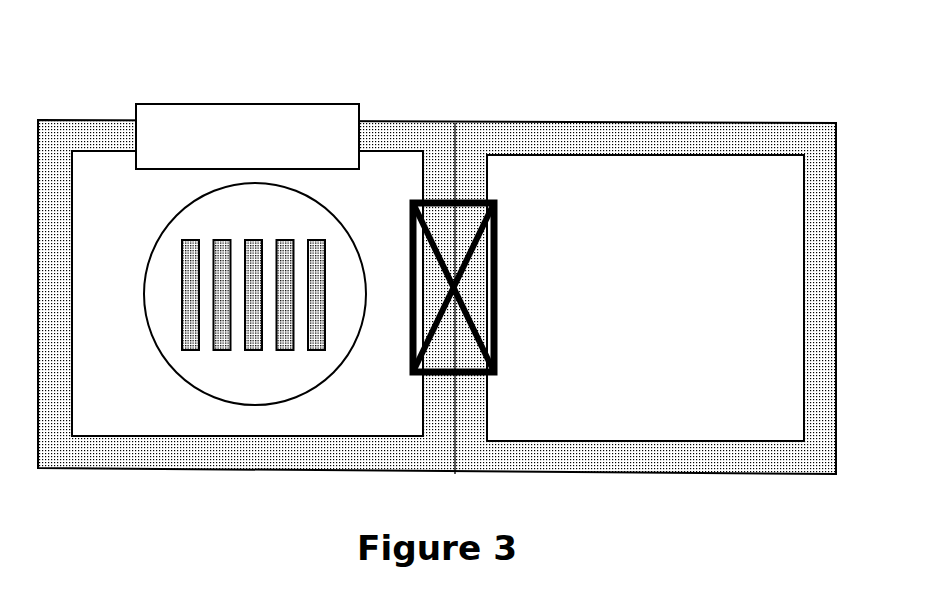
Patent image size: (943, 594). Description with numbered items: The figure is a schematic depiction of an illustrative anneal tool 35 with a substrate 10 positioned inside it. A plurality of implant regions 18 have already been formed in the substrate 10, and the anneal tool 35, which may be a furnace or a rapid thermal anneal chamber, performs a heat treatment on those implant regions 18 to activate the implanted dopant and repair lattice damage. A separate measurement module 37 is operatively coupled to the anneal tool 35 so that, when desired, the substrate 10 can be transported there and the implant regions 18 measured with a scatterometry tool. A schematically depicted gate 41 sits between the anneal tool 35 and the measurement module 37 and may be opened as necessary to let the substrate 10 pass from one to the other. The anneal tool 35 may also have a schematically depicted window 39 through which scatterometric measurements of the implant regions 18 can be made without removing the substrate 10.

The substrate 10 is at (238, 380).
The implant regions 18 is at (317, 343).
The anneal tool 35 is at (143, 388).
The measurement module 37 is at (628, 182).
The window 39 is at (310, 120).
The gate 41 is at (463, 200).